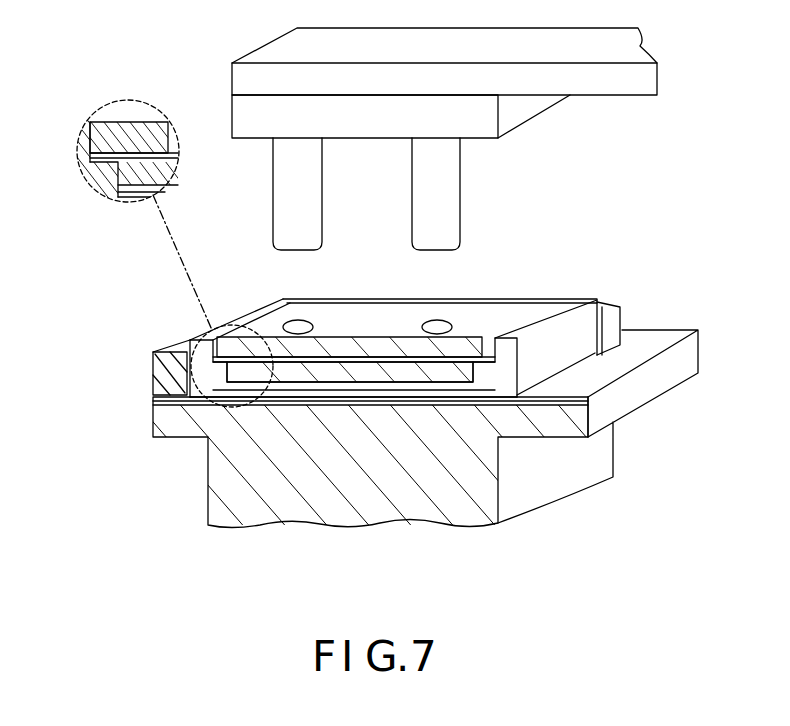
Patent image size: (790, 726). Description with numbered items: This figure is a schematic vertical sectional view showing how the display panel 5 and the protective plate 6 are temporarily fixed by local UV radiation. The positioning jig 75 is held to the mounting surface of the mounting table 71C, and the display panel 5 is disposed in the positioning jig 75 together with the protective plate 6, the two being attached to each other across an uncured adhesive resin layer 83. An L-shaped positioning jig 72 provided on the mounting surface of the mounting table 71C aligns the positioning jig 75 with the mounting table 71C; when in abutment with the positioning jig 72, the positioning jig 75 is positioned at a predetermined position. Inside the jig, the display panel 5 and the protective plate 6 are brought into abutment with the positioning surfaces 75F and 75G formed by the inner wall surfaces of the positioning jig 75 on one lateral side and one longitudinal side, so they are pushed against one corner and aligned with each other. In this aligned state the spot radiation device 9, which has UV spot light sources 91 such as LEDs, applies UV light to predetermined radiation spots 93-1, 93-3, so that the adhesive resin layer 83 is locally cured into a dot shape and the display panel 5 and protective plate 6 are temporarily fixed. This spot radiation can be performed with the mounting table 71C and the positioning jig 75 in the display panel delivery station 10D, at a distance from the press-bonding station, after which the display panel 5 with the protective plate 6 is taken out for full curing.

The spot radiation device 9 is at (283, 47).
The UV spot light source 91 is at (310, 191).
The positioning surface 75F is at (96, 119).
The positioning surface 75G is at (127, 199).
The positioning jig 75 is at (200, 338).
The protective plate 6 is at (134, 122).
The display panel 5 is at (155, 118).
The adhesive resin layer 83 is at (373, 357).
The radiation spot 93-1 is at (300, 318).
The radiation spot 93-3 is at (439, 318).
The positioning jig 72 is at (152, 374).
The mounting table 71C is at (495, 420).
The display panel delivery station 10D is at (553, 545).